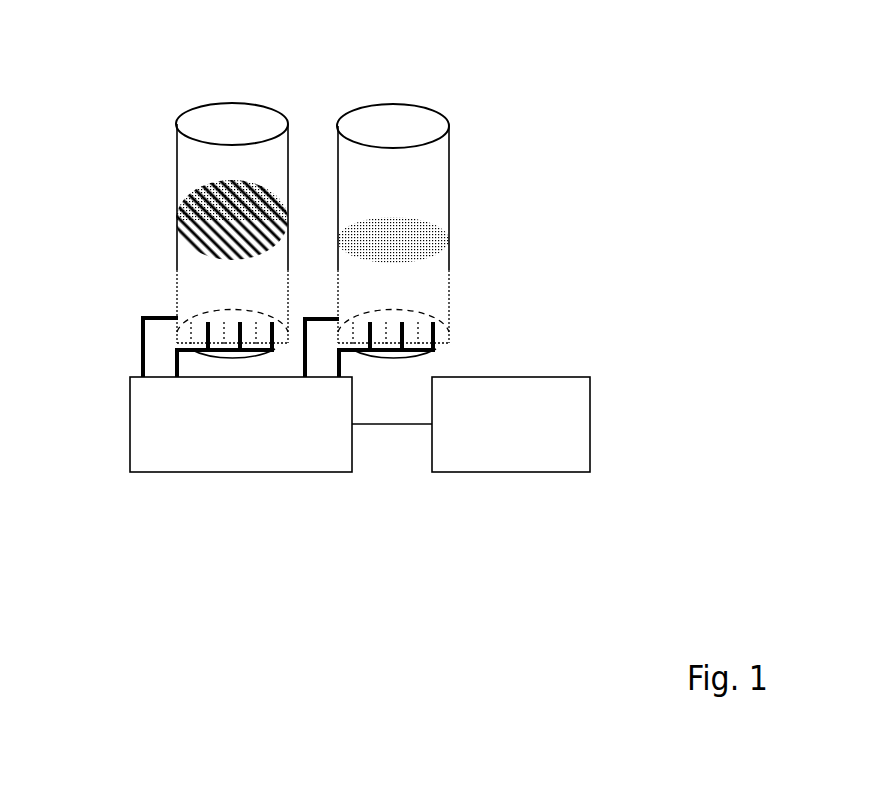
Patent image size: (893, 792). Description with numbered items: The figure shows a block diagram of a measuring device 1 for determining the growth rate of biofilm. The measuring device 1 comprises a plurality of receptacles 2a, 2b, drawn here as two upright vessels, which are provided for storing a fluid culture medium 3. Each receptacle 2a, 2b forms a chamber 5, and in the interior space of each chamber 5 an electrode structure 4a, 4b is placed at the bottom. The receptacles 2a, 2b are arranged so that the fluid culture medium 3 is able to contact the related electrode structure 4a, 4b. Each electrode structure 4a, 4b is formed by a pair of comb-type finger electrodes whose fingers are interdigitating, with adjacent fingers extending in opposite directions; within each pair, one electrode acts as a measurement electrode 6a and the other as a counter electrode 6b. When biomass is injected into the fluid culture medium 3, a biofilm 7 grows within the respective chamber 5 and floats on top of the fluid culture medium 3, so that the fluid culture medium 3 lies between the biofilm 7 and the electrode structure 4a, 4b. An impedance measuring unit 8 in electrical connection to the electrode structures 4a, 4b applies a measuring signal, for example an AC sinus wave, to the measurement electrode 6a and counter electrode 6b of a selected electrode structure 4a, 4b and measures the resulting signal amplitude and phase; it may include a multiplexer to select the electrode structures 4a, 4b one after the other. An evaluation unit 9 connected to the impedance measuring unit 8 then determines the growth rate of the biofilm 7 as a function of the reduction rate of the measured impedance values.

The measuring device 1 is at (597, 101).
The receptacle 2a is at (176, 283).
The receptacle 2b is at (450, 286).
The fluid culture medium 3 is at (220, 262).
The electrode structure 4a is at (203, 340).
The electrode structure 4b is at (438, 333).
The chamber 5 is at (195, 162).
The measurement electrode 6a is at (163, 318).
The counter electrode 6b is at (218, 350).
The biofilm 7 is at (197, 218).
The impedance measuring unit 8 is at (281, 424).
The evaluation unit 9 is at (511, 424).